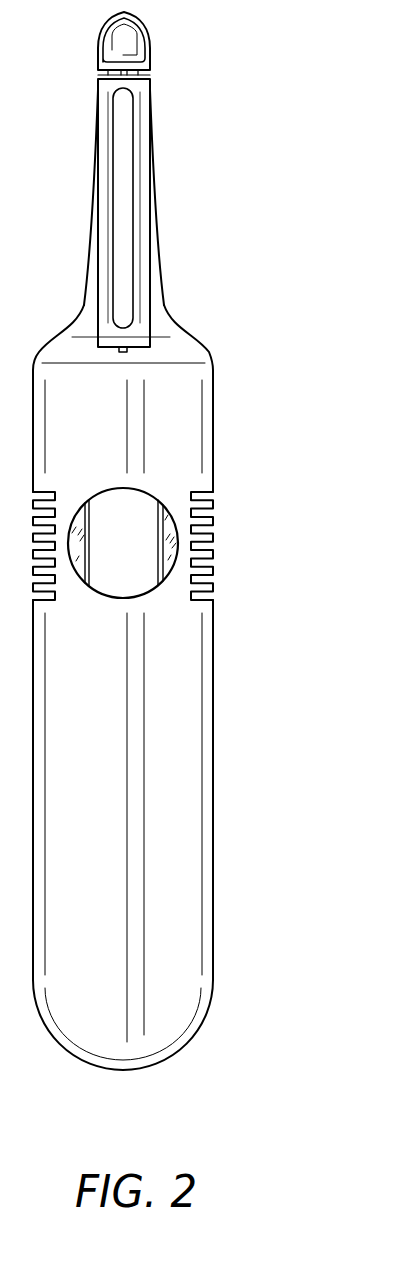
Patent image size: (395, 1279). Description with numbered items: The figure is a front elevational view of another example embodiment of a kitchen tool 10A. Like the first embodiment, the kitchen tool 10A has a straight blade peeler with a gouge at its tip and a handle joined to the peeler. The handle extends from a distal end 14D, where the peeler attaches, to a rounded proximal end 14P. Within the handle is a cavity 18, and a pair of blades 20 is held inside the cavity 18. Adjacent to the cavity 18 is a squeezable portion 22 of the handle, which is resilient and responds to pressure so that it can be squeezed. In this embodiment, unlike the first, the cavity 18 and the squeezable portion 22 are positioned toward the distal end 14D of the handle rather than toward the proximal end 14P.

The kitchen tool 10A is at (262, 222).
The distal end of the handle 14D is at (183, 350).
The proximal end of the handle 14P is at (173, 1057).
The cavity 18 is at (138, 515).
The pair of blades 20 is at (168, 555).
The squeezable portion 22 is at (240, 528).